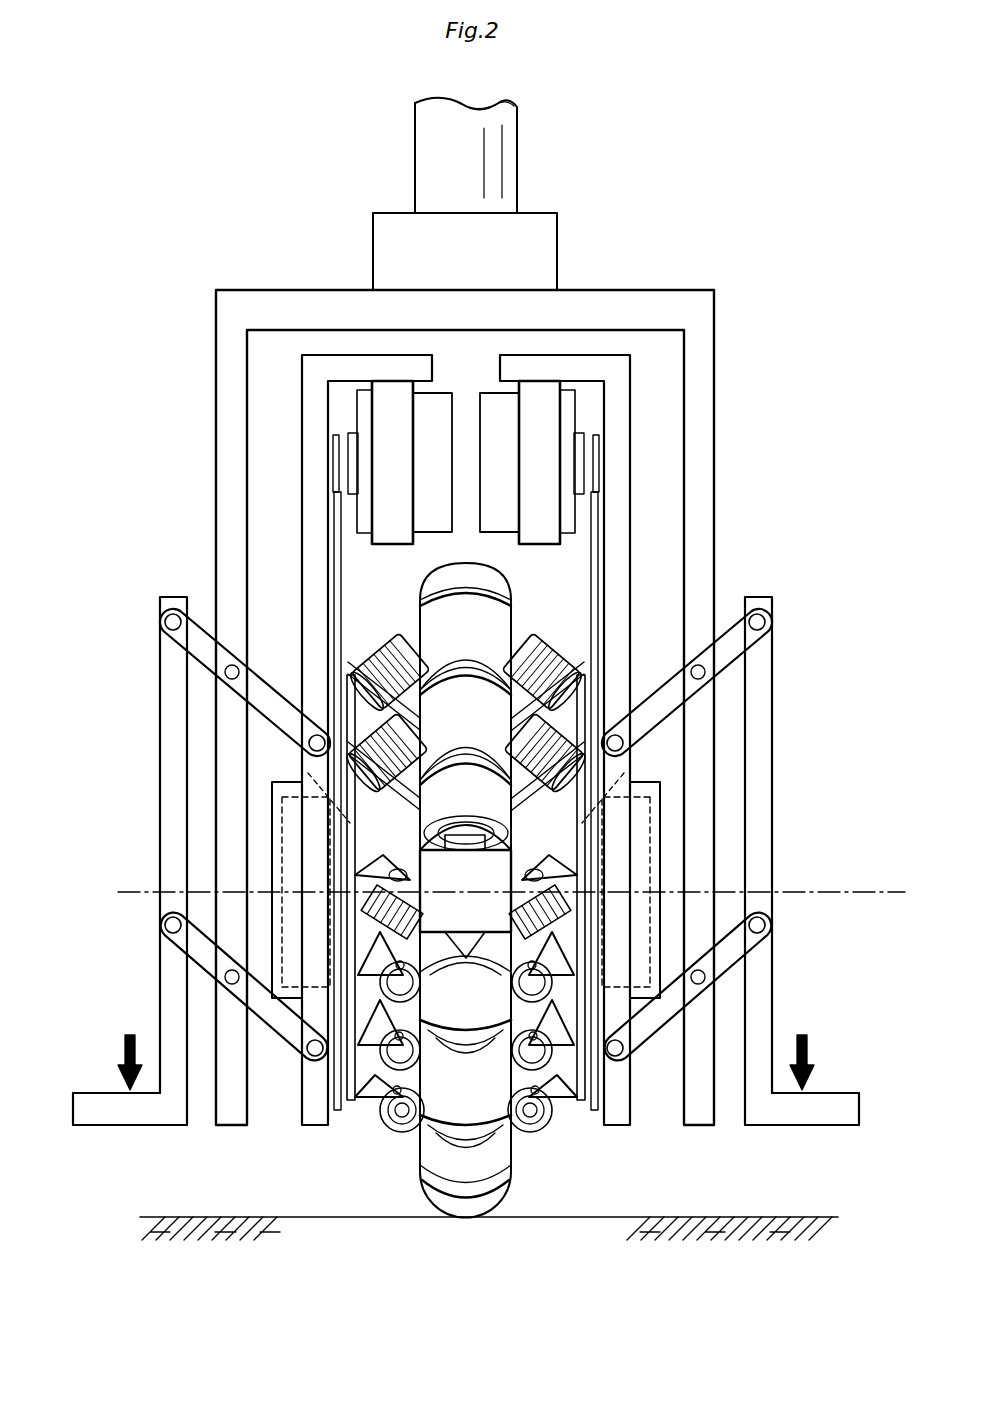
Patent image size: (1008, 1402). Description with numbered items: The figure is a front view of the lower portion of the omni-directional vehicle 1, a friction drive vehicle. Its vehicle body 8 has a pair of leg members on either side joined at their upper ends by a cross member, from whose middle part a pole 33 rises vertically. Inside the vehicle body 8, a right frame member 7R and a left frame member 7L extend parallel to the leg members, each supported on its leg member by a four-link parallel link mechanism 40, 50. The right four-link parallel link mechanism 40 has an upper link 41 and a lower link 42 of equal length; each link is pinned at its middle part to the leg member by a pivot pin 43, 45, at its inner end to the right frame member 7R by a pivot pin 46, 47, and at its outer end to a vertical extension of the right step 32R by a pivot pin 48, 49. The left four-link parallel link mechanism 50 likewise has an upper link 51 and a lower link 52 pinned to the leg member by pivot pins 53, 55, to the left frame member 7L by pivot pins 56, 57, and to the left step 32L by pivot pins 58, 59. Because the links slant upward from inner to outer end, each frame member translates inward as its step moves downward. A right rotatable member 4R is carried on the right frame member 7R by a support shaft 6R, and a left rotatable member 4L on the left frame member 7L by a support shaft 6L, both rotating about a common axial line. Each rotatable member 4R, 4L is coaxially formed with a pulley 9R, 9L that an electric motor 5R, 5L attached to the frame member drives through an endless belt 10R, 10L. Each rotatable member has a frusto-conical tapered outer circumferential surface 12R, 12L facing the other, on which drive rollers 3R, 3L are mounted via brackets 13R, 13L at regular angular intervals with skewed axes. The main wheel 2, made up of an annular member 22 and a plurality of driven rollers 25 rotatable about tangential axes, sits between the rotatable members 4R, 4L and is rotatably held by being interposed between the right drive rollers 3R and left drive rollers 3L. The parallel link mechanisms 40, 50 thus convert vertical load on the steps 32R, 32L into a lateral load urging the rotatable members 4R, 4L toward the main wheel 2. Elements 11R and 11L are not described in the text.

The omni-directional vehicle 1 is at (742, 443).
The main wheel 2 is at (525, 1187).
The right drive rollers 3R is at (382, 663).
The left drive rollers 3L is at (550, 663).
The right rotatable member 4R is at (352, 990).
The left rotatable member 4L is at (567, 1007).
The right electric motor 5R is at (425, 425).
The left electric motor 5L is at (505, 437).
The right support shaft 6R is at (293, 797).
The left support shaft 6L is at (639, 797).
The right frame member 7R is at (313, 588).
The left frame member 7L is at (618, 603).
The vehicle body 8 is at (708, 307).
The right pulley 9R is at (337, 688).
The left pulley 9L is at (595, 688).
The right endless belt 10R is at (343, 557).
The left endless belt 10L is at (587, 560).
The right electric motor 11R is at (397, 530).
The left electric motor 11L is at (533, 530).
The right frusto-conical tapered outer circumferential surface 12R is at (355, 852).
The left frusto-conical tapered outer circumferential surface 12L is at (577, 852).
The right bracket 13R is at (393, 1087).
The left bracket 13L is at (567, 1067).
The annular member 22 is at (370, 1055).
The driven rollers 25 is at (448, 995).
The right step 32R is at (150, 1127).
The left step 32L is at (782, 1127).
The pole 33 is at (518, 157).
The right four-link parallel link mechanism 40 is at (142, 648).
The upper link 41 is at (195, 655).
The lower link 42 is at (185, 947).
The pivot pin 43 is at (232, 662).
The pivot pin 45 is at (205, 1013).
The pivot pin 46 is at (293, 725).
The pivot pin 47 is at (232, 987).
The pivot pin 48 is at (170, 612).
The pivot pin 49 is at (165, 923).
The left four-link parallel link mechanism 50 is at (788, 648).
The upper link 51 is at (737, 650).
The lower link 52 is at (735, 960).
The pivot pin 53 is at (698, 662).
The pivot pin 55 is at (710, 980).
The pivot pin 56 is at (632, 727).
The pivot pin 57 is at (627, 1060).
The pivot pin 58 is at (760, 612).
The pivot pin 59 is at (768, 920).